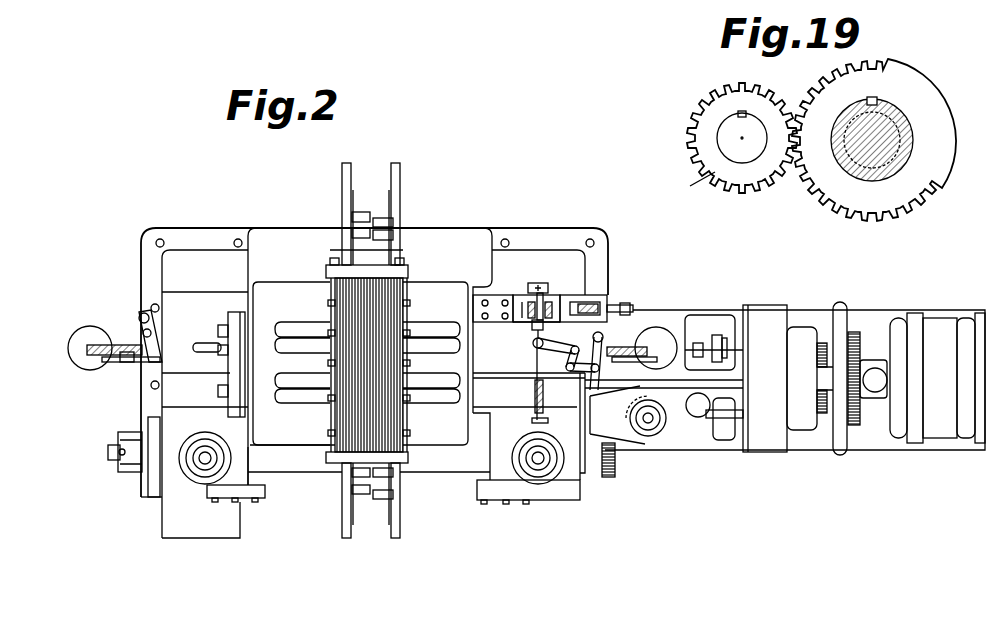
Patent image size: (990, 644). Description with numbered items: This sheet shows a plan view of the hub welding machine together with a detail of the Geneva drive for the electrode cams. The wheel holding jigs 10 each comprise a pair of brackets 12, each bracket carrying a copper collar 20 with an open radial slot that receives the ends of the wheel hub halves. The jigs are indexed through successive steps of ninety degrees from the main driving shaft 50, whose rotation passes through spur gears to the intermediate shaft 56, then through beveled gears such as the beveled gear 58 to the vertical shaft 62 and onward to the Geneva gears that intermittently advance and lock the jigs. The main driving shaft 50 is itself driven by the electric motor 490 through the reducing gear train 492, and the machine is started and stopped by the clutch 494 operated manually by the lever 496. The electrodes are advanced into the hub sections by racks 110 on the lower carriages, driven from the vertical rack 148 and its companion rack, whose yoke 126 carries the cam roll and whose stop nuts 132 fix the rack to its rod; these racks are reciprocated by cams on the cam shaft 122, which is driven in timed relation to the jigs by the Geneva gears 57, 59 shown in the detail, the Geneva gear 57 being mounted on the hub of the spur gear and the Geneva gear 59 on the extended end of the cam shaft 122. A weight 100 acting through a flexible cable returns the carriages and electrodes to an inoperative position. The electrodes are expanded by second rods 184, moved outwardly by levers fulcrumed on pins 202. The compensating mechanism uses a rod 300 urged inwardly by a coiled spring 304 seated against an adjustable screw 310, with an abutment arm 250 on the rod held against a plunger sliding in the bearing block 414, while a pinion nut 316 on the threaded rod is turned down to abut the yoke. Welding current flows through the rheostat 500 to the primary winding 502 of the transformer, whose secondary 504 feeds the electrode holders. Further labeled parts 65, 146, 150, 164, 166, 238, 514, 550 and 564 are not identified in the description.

In FIG. 2, the wheel holding jig 10 is at (378, 528).
In FIG. 2, the bracket 12 is at (355, 220).
In FIG. 2, the collar 20 is at (394, 164).
In FIG. 2, the main driving shaft 50 is at (638, 380).
In FIG. 19, the intermediate shaft 56 is at (882, 130).
In FIG. 19, the Geneva gear 57 is at (893, 78).
In FIG. 19, the beveled gear 58 is at (912, 152).
In FIG. 2, the Geneva gear 59 is at (615, 470).
In FIG. 19, the Geneva gear 59 is at (689, 185).
In FIG. 2, the vertical shaft 62 is at (655, 424).
In FIG. 2, the bracket 65 is at (126, 470).
In FIG. 2, the weight 100 is at (74, 335).
In FIG. 2, the rack 110 is at (222, 458).
In FIG. 19, the cam shaft 122 is at (757, 138).
In FIG. 2, the yoke 126 is at (207, 456).
In FIG. 2, the stop nut 132 is at (200, 470).
In FIG. 2, the shaft 146 is at (530, 458).
In FIG. 2, the vertical rack 148 is at (530, 450).
In FIG. 2, the bearing housing 150 is at (545, 470).
In FIG. 2, the spring rod 164 is at (92, 352).
In FIG. 2, the pivot link 166 is at (118, 345).
In FIG. 2, the second rod 184 is at (664, 384).
In FIG. 2, the pin 202 is at (552, 344).
In FIG. 2, the plate 238 is at (152, 494).
In FIG. 2, the abutment arm 250 is at (532, 308).
In FIG. 2, the rod 300 is at (640, 307).
In FIG. 2, the coiled spring 304 is at (600, 298).
In FIG. 2, the adjustable screw 310 is at (633, 305).
In FIG. 2, the pinion nut 316 is at (546, 292).
In FIG. 2, the bearing block 414 is at (478, 298).
In FIG. 2, the electric motor 490 is at (933, 322).
In FIG. 2, the reducing gear train 492 is at (800, 330).
In FIG. 2, the clutch 494 is at (728, 412).
In FIG. 2, the lever 496 is at (702, 345).
In FIG. 2, the rheostat 500 is at (232, 320).
In FIG. 2, the primary winding 502 is at (427, 362).
In FIG. 2, the secondary 504 is at (296, 360).
In FIG. 2, the rod 514 is at (535, 342).
In FIG. 2, the valve block 550 is at (525, 298).
In FIG. 2, the rod 564 is at (537, 380).